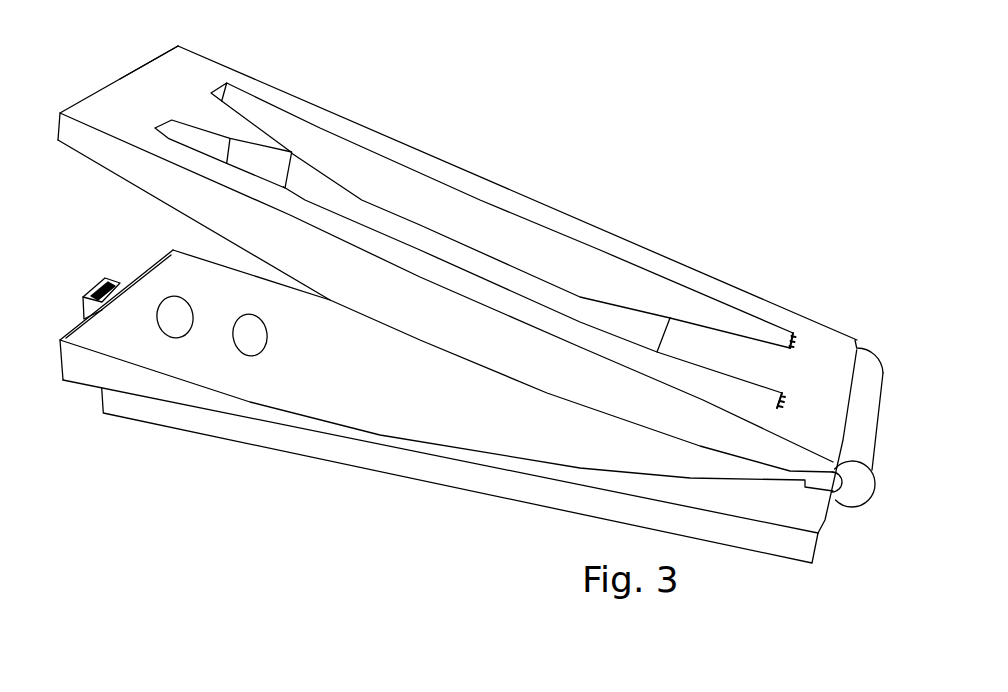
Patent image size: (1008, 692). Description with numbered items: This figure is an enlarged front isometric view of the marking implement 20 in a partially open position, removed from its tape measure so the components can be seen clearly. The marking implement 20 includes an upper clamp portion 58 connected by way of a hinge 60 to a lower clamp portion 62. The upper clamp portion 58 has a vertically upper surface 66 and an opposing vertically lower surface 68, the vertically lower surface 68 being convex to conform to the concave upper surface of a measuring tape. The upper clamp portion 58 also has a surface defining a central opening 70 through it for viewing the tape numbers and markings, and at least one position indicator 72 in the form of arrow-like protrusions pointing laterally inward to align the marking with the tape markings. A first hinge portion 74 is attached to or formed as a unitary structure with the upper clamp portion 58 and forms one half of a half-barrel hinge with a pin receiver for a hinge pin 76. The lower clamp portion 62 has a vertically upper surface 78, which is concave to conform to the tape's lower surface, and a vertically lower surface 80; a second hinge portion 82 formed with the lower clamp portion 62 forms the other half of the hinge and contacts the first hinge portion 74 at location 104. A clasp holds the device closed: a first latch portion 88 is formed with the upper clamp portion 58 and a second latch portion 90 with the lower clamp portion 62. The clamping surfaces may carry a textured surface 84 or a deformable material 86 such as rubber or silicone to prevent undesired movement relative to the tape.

The marking implement 20 is at (580, 147).
The upper clamp portion 58 is at (504, 186).
The hinge 60 is at (880, 517).
The lower clamp portion 62 is at (268, 437).
The vertically upper surface 66 is at (783, 307).
The vertically lower surface 68 is at (547, 393).
The opening 70 is at (553, 243).
The position indicator 72 is at (277, 141).
The first hinge portion 74 is at (868, 352).
The hinge pin 76 is at (850, 510).
The vertically upper surface 78 is at (352, 400).
The vertically lower surface 80 is at (466, 479).
The second hinge portion 82 is at (865, 520).
The textured surface 84 is at (167, 347).
The deformable material 86 is at (230, 360).
The first latch portion 88 is at (105, 88).
The second latch portion 90 is at (88, 293).
The location 104 is at (880, 420).